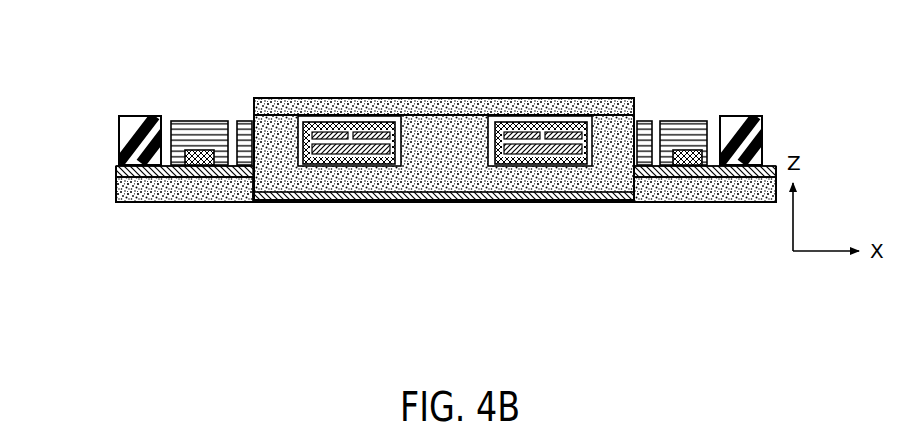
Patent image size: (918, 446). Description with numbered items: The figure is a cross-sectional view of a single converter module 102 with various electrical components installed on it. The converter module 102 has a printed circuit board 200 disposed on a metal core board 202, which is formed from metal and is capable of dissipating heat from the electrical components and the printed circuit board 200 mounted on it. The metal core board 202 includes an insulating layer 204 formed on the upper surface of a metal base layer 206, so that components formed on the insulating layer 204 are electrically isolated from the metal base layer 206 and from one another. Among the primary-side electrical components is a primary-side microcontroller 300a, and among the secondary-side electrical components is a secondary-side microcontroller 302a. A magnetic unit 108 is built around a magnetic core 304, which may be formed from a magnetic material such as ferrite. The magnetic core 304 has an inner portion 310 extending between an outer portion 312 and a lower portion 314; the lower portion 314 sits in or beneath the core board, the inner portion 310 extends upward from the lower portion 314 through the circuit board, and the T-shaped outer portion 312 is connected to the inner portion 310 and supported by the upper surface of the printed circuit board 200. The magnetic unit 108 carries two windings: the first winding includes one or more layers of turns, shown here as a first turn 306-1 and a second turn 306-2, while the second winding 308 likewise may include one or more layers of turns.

The converter module 102 is at (86, 70).
The magnetic unit 108 is at (360, 170).
The printed circuit board 200 is at (340, 168).
The metal core board 202 is at (110, 196).
The insulating layer 204 is at (652, 170).
The metal base layer 206 is at (738, 192).
The primary-side microcontroller 300a is at (199, 150).
The secondary-side microcontroller 302a is at (690, 165).
The magnetic core 304 is at (248, 184).
The first turn 306-1 is at (521, 133).
The second turn 306-2 is at (568, 133).
The second winding 308 is at (594, 144).
The inner portion 310 is at (457, 172).
The outer portion 312 is at (277, 110).
The lower portion 314 is at (305, 191).